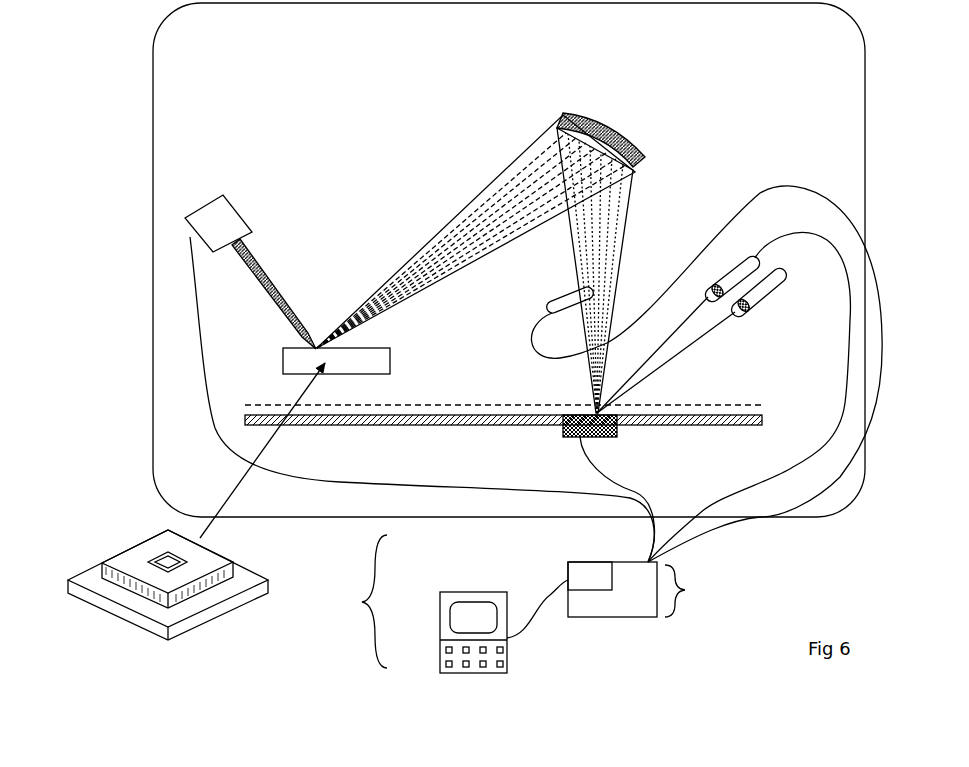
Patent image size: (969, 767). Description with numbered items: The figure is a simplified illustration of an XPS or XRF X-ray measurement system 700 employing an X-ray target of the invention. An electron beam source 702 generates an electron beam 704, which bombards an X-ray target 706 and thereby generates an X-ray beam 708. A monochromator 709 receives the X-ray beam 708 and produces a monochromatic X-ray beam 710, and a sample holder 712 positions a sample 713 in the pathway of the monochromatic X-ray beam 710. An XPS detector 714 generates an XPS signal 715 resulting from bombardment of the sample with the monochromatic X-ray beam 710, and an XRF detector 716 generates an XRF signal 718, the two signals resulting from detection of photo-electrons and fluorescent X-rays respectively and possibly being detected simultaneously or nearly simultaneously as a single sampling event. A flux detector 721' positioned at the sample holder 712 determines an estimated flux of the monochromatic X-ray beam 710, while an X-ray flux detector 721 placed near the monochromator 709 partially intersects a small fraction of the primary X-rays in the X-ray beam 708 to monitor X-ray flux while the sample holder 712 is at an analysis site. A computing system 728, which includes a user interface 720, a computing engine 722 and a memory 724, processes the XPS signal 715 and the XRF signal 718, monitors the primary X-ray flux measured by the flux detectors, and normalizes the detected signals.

The X-ray measurement system 700 is at (137, 202).
The electron beam source 702 is at (228, 213).
The electron beam 704 is at (270, 288).
The X-ray target 706 is at (343, 363).
The X-ray beam 708 is at (440, 195).
The monochromator 709 is at (612, 127).
The monochromatic X-ray beam 710 is at (640, 178).
The sample holder 712 is at (765, 416).
The sample 713 is at (245, 405).
The XPS detector 714 is at (755, 296).
The XPS signal 715 is at (715, 332).
The XRF detector 716 is at (755, 258).
The XRF signal 718 is at (668, 343).
The user interface 720 is at (447, 610).
The X-ray flux detector 721 is at (676, 374).
The flux detector 721' is at (625, 488).
The computing engine 722 is at (646, 589).
The memory 724 is at (590, 572).
The computing system 728 is at (353, 601).